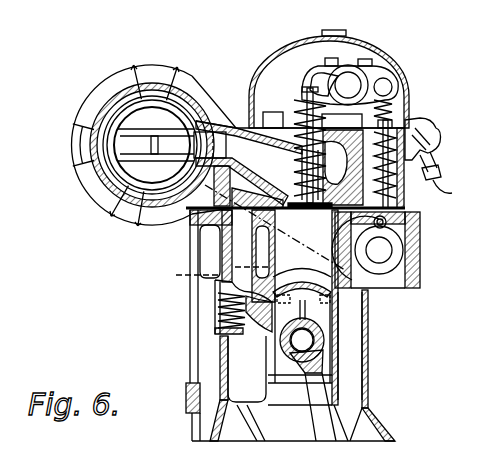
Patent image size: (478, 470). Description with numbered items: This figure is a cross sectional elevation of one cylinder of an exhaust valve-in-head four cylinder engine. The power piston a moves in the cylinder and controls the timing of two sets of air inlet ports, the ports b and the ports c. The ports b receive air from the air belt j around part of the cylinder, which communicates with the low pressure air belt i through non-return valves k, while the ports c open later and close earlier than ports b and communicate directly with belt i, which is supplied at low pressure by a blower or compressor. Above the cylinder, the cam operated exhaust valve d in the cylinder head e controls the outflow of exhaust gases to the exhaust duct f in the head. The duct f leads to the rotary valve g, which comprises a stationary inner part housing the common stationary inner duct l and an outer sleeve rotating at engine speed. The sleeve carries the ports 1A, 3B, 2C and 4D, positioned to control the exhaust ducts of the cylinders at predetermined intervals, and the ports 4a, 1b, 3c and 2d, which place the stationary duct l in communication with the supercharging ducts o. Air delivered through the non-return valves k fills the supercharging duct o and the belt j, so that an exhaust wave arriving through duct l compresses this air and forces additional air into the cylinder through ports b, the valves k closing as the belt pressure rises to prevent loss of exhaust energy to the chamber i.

The rotary valve port 3B is at (113, 80).
The rotary valve port 1A is at (200, 88).
The rotary valve port 1b is at (153, 70).
The rotary valve port 3c is at (68, 143).
The rotary valve port 2C is at (95, 186).
The stationary inner duct l is at (154, 166).
The rotary valve g is at (170, 148).
The rotary valve port 2d is at (136, 232).
The rotary valve port 4D is at (164, 230).
The rotary valve port 4a is at (237, 128).
The exhaust duct f is at (284, 200).
The exhaust valve d is at (312, 203).
The cylinder head e is at (394, 178).
The supercharging duct o is at (246, 257).
The low pressure air belt i is at (248, 388).
The air inlet port b is at (244, 297).
The non-return valve k is at (218, 315).
The air belt j is at (222, 331).
The air inlet port c is at (338, 298).
The power piston a is at (318, 313).